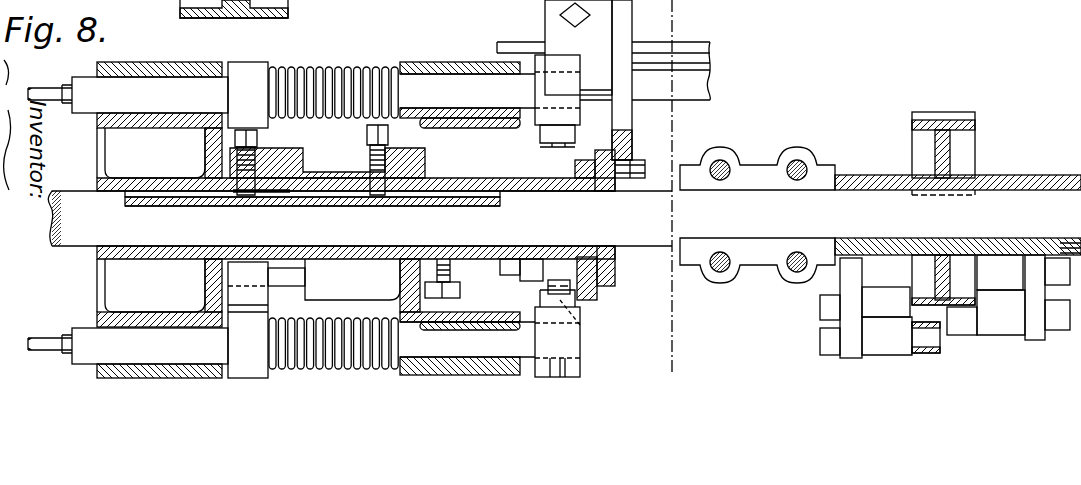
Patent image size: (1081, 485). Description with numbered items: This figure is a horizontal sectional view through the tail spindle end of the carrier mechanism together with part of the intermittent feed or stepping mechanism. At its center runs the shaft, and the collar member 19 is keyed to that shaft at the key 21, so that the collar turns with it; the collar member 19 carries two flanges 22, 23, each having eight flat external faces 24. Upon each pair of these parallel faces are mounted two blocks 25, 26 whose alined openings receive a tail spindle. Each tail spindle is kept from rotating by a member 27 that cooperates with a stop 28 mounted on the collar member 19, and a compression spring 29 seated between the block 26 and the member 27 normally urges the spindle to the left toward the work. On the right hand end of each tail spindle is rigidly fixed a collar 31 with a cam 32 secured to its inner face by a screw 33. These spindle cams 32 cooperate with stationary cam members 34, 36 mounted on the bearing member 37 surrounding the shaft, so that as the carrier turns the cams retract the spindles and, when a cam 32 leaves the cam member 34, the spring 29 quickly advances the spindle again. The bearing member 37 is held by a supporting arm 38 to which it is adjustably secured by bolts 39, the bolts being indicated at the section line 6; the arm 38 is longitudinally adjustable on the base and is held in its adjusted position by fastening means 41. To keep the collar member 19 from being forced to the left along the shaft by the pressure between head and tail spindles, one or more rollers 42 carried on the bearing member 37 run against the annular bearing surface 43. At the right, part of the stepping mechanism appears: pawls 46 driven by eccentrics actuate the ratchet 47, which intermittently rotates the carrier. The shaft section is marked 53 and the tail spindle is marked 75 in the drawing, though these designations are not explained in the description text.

The Fig. 6 section reference 6 is at (656, 374).
The collar member 19 is at (387, 262).
The key 21 is at (262, 197).
The flange 22 is at (176, 130).
The flange 23 is at (490, 127).
The flat external face 24 is at (115, 333).
The block 25 is at (262, 36).
The block 26 is at (457, 62).
The member 27 is at (240, 372).
The stop 28 is at (304, 278).
The compression spring 29 is at (350, 366).
The collar 31 is at (570, 369).
The cam 32 is at (552, 298).
The screw 33 is at (580, 325).
The cam member 34 is at (528, 262).
The cam member 36 is at (588, 258).
The bearing member 37 is at (555, 182).
The supporting arm 38 is at (626, 122).
The bolt 39 is at (646, 168).
The fastening means 41 is at (568, 14).
The roller 42 is at (460, 291).
The annular bearing surface 43 is at (422, 152).
The pawl 46 is at (965, 335).
The ratchet 47 is at (945, 118).
The shaft 53 is at (360, 218).
The upper piston rod 75 is at (88, 83).